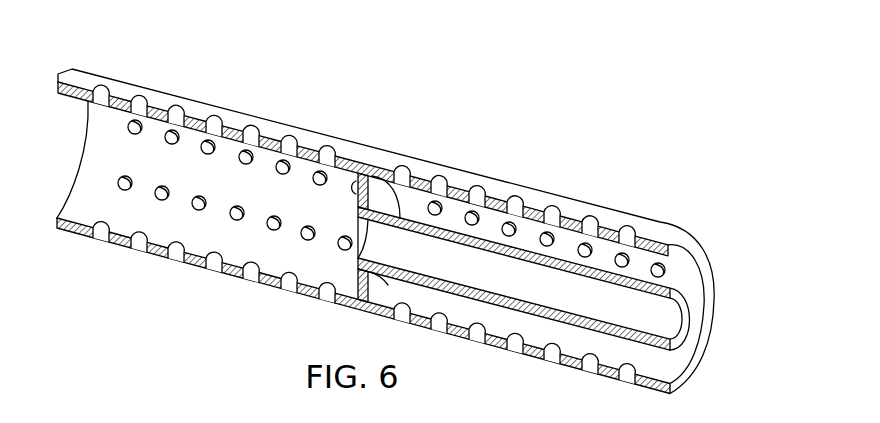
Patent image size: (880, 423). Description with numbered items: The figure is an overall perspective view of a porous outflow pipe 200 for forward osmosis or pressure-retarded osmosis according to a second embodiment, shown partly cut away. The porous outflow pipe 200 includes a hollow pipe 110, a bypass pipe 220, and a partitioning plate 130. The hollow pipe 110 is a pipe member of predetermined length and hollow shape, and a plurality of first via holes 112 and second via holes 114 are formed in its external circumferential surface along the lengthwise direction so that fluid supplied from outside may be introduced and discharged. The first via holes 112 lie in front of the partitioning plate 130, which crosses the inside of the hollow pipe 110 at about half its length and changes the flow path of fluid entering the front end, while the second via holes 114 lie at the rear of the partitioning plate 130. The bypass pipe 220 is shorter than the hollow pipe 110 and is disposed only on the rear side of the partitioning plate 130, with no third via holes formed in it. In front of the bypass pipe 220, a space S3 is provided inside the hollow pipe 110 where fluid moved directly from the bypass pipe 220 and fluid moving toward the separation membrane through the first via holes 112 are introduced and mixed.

The hollow pipe 110 is at (668, 225).
The first via holes 112 is at (284, 138).
The second via holes 114 is at (482, 191).
The partitioning plate 130 is at (379, 193).
The porous outflow pipe 200 is at (577, 221).
The bypass pipe 220 is at (690, 285).
The space S3 is at (148, 162).